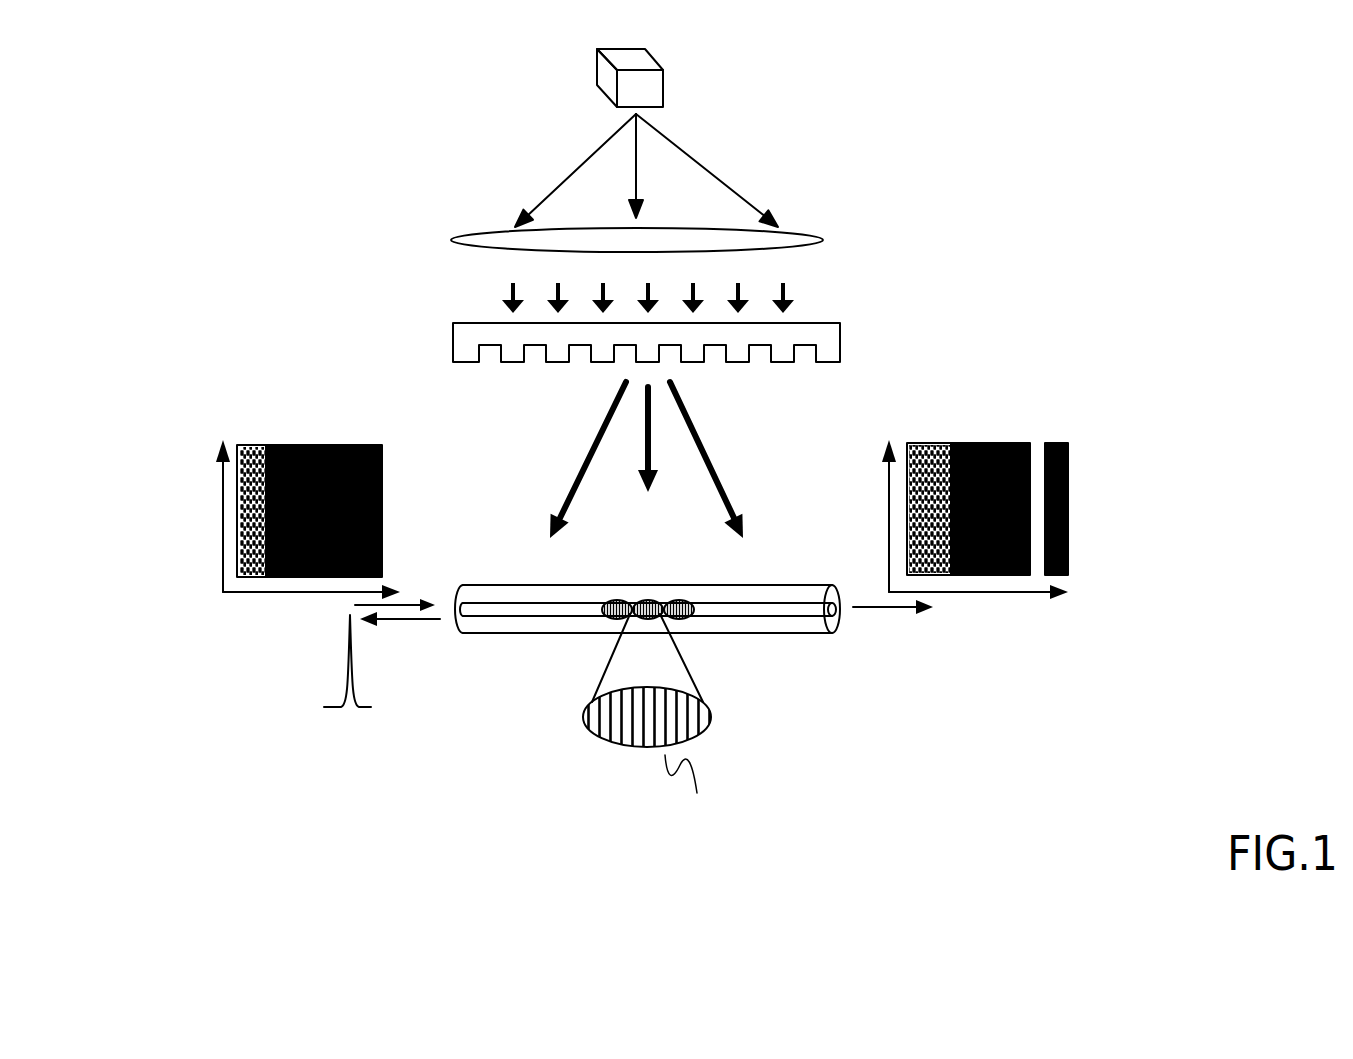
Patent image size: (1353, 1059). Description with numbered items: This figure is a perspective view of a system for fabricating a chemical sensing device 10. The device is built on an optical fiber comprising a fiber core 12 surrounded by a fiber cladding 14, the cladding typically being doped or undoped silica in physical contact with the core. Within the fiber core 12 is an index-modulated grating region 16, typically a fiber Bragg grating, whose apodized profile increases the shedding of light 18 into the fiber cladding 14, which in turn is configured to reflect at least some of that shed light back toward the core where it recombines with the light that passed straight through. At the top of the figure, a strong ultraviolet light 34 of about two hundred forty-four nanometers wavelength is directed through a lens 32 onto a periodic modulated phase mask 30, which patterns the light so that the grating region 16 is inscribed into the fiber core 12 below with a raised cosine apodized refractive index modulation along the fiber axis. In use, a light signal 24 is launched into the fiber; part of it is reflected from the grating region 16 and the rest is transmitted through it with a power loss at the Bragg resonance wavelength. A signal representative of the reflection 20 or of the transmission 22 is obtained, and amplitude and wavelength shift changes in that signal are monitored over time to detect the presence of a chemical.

The chemical sensing device 10 is at (458, 712).
The fiber core 12 is at (470, 613).
The fiber cladding 14 is at (837, 622).
The index-modulated grating region 16 is at (600, 612).
The light 18 is at (305, 620).
The reflection 20 is at (312, 667).
The transmission 22 is at (995, 610).
The light signal 24 is at (238, 562).
The phase mask 30 is at (840, 344).
The lens 32 is at (775, 240).
The ultraviolet light 34 is at (603, 80).